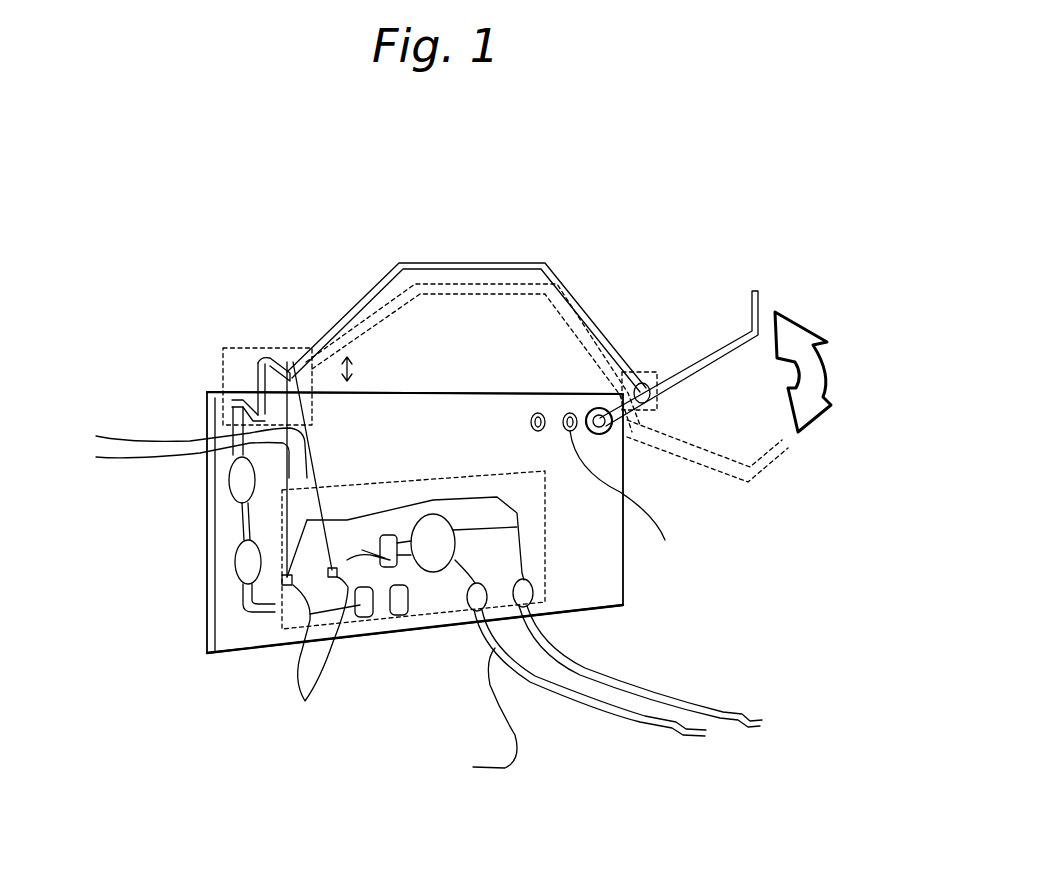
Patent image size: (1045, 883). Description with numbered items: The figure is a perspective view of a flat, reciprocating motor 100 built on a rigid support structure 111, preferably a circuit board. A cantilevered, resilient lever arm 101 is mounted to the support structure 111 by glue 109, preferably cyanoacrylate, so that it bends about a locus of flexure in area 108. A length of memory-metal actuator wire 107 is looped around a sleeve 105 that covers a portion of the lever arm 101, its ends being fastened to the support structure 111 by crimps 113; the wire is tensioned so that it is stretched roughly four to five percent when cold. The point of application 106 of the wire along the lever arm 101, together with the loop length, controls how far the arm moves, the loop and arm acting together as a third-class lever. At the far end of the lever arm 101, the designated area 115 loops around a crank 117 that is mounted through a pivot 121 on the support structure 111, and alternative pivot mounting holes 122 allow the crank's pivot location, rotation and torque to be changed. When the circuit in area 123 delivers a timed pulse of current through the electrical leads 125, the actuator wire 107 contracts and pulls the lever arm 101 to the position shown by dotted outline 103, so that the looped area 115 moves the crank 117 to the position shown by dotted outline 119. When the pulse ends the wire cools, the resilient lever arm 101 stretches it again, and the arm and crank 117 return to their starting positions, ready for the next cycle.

The flat reciprocating motor 100 is at (238, 305).
The cantilevered resilient lever arm 101 is at (507, 265).
The dotted outline of lever arm new position 103 is at (400, 292).
The sleeve 105 is at (308, 355).
The point of application 106 is at (298, 356).
The memory-metal actuator wire 107 is at (96, 457).
The locus of flexure 108 is at (215, 386).
The glue 109 is at (243, 560).
The rigid support structure 111 is at (213, 638).
The crimps 113 is at (321, 551).
The looped portion of lever arm 115 is at (645, 370).
The crank 117 is at (753, 292).
The dotted outline of crank new position 119 is at (772, 457).
The pivot 121 is at (598, 434).
The alternative pivot mounting holes 122 is at (540, 430).
The electric circuit area 123 is at (550, 562).
The electrical leads 125 is at (550, 650).